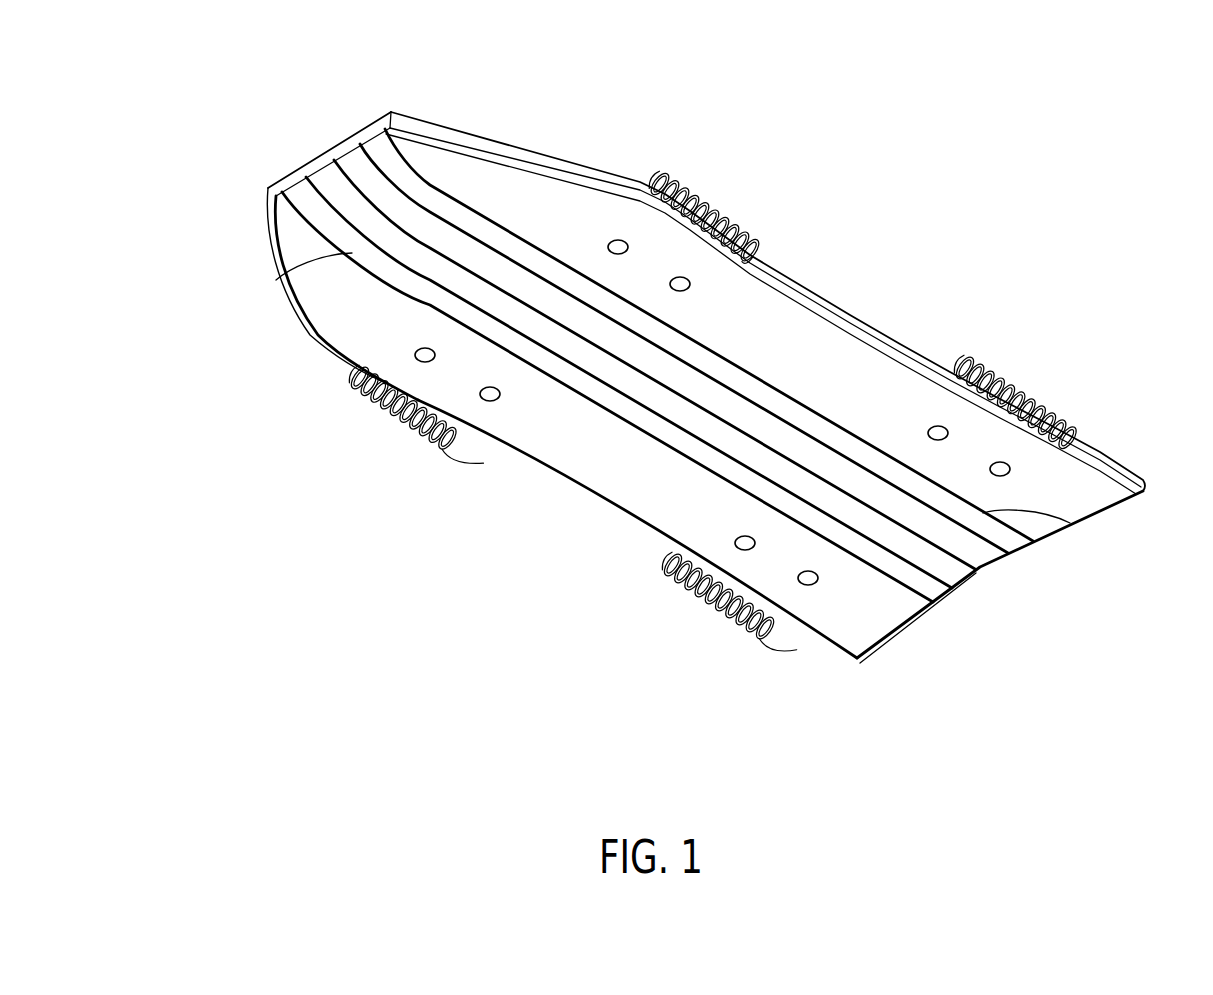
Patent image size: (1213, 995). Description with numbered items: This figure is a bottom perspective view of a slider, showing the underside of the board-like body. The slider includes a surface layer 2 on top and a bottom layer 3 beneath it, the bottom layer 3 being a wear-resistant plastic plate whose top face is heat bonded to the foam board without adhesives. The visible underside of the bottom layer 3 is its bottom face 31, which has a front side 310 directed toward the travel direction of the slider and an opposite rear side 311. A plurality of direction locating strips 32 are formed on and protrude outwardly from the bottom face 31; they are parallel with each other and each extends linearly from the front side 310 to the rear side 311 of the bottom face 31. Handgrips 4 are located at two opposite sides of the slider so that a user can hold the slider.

The surface layer 2 is at (524, 148).
The bottom layer 3 is at (573, 444).
The bottom face 31 is at (847, 350).
The front side 310 is at (289, 158).
The rear side 311 is at (952, 603).
The direction locating strips 32 is at (276, 280).
The handgrips 4 is at (713, 200).